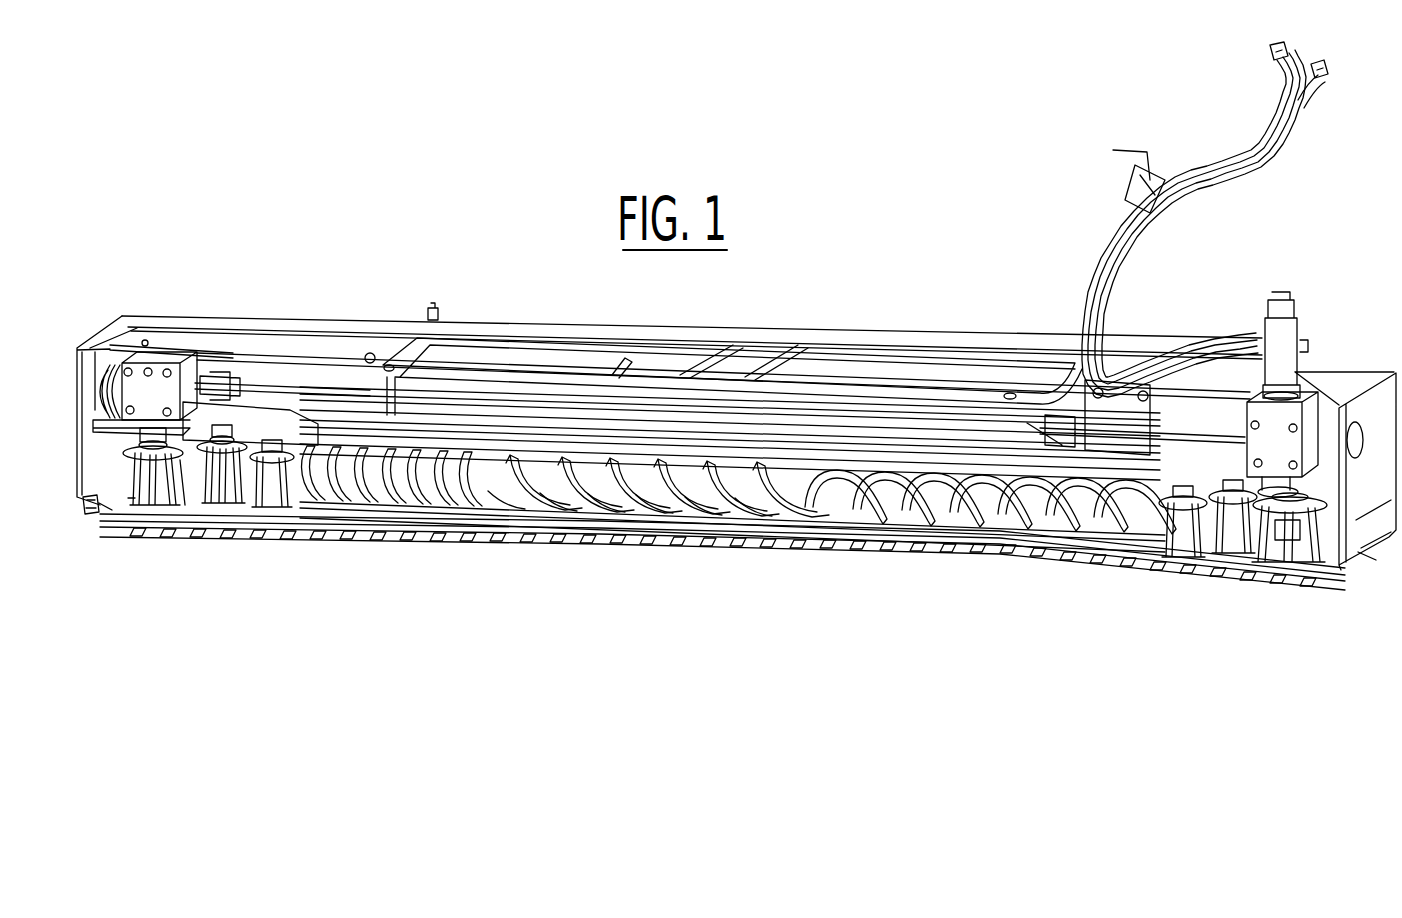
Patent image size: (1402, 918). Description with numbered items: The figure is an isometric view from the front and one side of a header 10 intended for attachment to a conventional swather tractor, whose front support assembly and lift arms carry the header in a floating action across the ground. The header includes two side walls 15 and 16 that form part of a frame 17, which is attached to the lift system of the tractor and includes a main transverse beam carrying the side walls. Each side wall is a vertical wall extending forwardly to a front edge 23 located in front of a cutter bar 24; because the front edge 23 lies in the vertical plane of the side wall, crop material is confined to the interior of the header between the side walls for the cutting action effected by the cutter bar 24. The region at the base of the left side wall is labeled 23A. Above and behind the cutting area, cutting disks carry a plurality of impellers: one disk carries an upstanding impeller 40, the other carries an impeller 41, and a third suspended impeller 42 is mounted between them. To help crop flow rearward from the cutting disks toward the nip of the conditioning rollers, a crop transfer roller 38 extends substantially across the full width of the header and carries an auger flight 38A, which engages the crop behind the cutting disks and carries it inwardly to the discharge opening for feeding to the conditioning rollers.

The header 10 is at (756, 294).
The side wall 15 is at (118, 322).
The side wall 16 is at (1380, 407).
The frame 17 is at (1168, 334).
The front edge 23 is at (120, 497).
The end wheel support 23A is at (95, 497).
The cutter bar 24 is at (351, 553).
The crop transfer roller 38 is at (597, 483).
The auger flight 38A is at (483, 492).
The impeller 40 is at (1270, 553).
The impeller 41 is at (1187, 553).
The suspended impeller 42 is at (1227, 553).